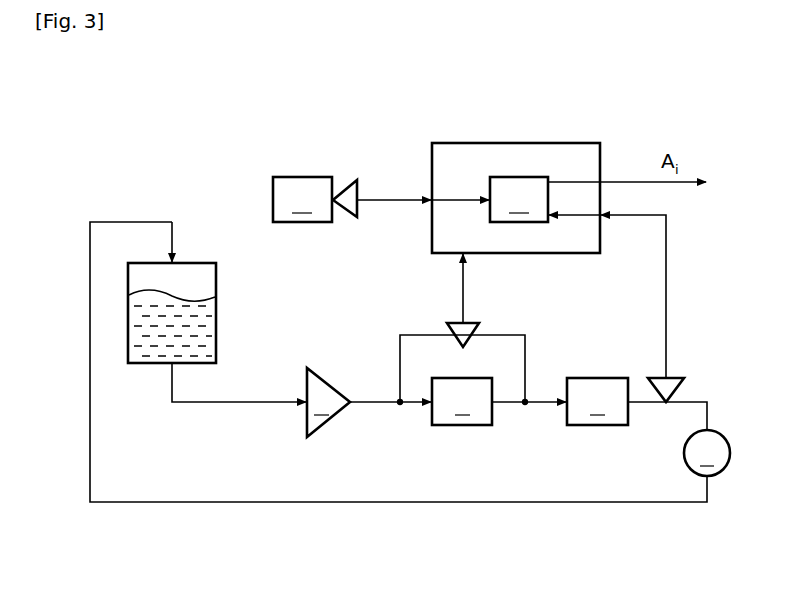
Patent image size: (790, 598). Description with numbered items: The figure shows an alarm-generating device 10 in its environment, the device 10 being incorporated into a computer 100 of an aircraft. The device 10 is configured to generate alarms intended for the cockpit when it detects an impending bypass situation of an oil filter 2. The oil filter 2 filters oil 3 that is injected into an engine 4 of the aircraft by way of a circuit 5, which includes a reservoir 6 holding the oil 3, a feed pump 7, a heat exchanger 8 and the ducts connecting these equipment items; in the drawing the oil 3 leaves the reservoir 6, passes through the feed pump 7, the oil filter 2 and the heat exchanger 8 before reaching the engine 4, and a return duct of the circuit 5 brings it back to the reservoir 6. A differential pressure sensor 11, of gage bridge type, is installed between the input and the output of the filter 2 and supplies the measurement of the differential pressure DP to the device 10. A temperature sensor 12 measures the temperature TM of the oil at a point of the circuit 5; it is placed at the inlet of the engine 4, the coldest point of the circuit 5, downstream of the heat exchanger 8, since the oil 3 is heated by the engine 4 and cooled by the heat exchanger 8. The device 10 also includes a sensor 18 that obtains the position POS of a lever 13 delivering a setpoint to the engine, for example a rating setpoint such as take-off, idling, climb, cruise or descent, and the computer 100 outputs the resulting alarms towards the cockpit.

The computer 100 is at (517, 142).
The alarm-generating device 10 is at (519, 199).
The lever 13 is at (302, 199).
The sensor 18 is at (346, 181).
The reservoir 6 is at (196, 262).
The oil 3 is at (200, 320).
The feed pump 7 is at (328, 402).
The oil filter 2 is at (462, 401).
The differential pressure sensor 11 is at (447, 323).
The heat exchanger 8 is at (597, 401).
The temperature sensor 12 is at (680, 378).
The engine 4 is at (707, 453).
The circuit 5 is at (398, 504).